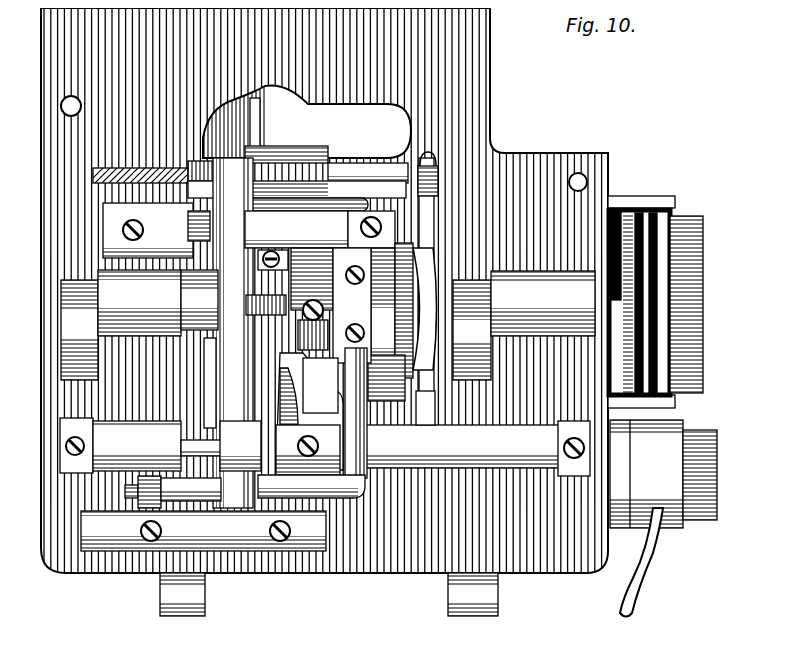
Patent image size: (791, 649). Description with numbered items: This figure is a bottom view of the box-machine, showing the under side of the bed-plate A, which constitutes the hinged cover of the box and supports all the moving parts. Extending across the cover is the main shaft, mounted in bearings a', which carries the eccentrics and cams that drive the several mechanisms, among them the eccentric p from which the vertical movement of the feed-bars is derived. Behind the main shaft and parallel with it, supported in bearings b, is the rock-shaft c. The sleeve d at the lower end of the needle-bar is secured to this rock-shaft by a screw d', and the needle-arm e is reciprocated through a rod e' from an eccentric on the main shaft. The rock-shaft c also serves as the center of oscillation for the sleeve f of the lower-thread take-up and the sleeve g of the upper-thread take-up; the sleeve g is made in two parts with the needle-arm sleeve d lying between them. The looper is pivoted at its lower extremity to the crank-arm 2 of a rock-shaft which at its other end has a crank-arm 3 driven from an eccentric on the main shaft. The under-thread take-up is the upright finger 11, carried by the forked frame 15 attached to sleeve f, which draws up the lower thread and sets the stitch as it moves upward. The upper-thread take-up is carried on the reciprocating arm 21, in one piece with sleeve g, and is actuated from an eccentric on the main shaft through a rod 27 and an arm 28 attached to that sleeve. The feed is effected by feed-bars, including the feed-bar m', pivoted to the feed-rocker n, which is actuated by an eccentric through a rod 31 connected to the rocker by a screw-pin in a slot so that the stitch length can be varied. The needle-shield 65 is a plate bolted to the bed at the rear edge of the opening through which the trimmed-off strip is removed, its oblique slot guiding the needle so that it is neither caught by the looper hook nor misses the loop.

The bed-plate A is at (410, 548).
The eccentric p is at (270, 183).
The needle-shield 65 is at (362, 166).
The feed-bar m' is at (388, 353).
The crank-arm 2 is at (393, 354).
The crank-arm 3 is at (232, 262).
The take-up finger 11 is at (430, 155).
The rod 27 is at (393, 354).
The frame 15 is at (436, 338).
The bearings a' is at (393, 354).
The rod e' is at (393, 353).
The needle-arm e is at (309, 411).
The arm 28 is at (338, 396).
The reciprocating arm 21 is at (393, 354).
The rod 31 is at (203, 383).
The bearings b is at (393, 354).
The rock-shaft c is at (393, 354).
The sleeve g is at (393, 353).
The sleeve d is at (393, 354).
The screw d' is at (325, 434).
The sleeve f is at (434, 421).
The feed-rocker n is at (393, 354).